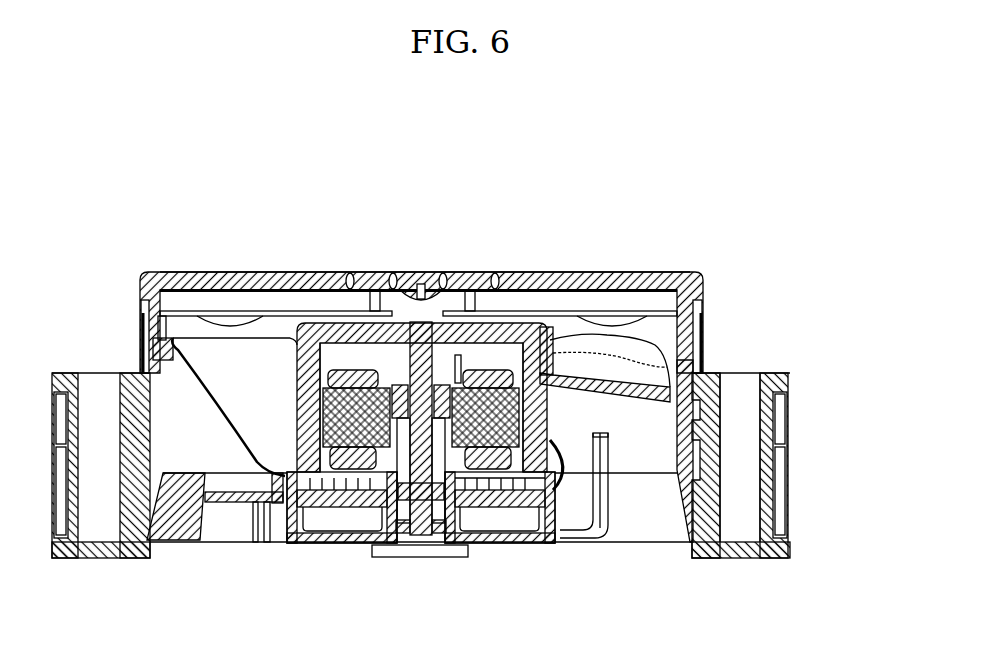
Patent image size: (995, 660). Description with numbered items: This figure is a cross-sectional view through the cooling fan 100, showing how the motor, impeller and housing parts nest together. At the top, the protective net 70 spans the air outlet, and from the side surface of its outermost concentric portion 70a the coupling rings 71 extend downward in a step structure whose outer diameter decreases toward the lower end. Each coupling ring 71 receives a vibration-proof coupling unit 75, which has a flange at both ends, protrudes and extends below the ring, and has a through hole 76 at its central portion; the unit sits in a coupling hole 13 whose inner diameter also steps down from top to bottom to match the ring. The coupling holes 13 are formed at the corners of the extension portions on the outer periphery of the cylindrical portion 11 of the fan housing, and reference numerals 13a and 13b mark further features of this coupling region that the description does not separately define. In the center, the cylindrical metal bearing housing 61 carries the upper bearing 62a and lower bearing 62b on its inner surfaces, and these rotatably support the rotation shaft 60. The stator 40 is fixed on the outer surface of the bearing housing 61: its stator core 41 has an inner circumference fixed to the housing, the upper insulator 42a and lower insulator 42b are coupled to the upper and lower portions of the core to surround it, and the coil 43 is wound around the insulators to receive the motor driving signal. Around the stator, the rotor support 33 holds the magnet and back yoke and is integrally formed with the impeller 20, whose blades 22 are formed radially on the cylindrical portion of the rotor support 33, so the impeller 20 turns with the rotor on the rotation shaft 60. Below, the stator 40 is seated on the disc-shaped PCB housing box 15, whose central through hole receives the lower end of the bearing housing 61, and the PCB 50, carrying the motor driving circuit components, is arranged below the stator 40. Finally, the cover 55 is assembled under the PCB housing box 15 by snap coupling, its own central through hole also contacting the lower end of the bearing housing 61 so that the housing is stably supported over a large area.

The cooling fan 100 is at (697, 222).
The protective net 70 is at (421, 278).
The outermost concentric portion 70a is at (543, 280).
The side pad 13b is at (170, 298).
The stator 40 is at (578, 322).
The rotor support 33 is at (303, 318).
The coil 43 is at (508, 362).
The upper bearing 62a is at (390, 375).
The lower bearing 62b is at (400, 532).
The rotation shaft 60 is at (410, 320).
The bearing housing 61 is at (440, 545).
The cover 55 is at (323, 543).
The PCB 50 is at (345, 507).
The lower insulator 42b is at (523, 480).
The upper insulator 42a is at (680, 358).
The stator core 41 is at (553, 470).
The blade 22 is at (225, 380).
The PCB housing box 15 is at (283, 513).
The impeller 20 is at (620, 517).
The coupling hole 13 is at (463, 491).
The bottom plate 13a is at (223, 545).
The cylindrical portion 11 is at (693, 490).
The through hole 76 is at (753, 520).
The vibration-proof coupling unit 75 is at (790, 373).
The coupling ring 71 is at (778, 420).